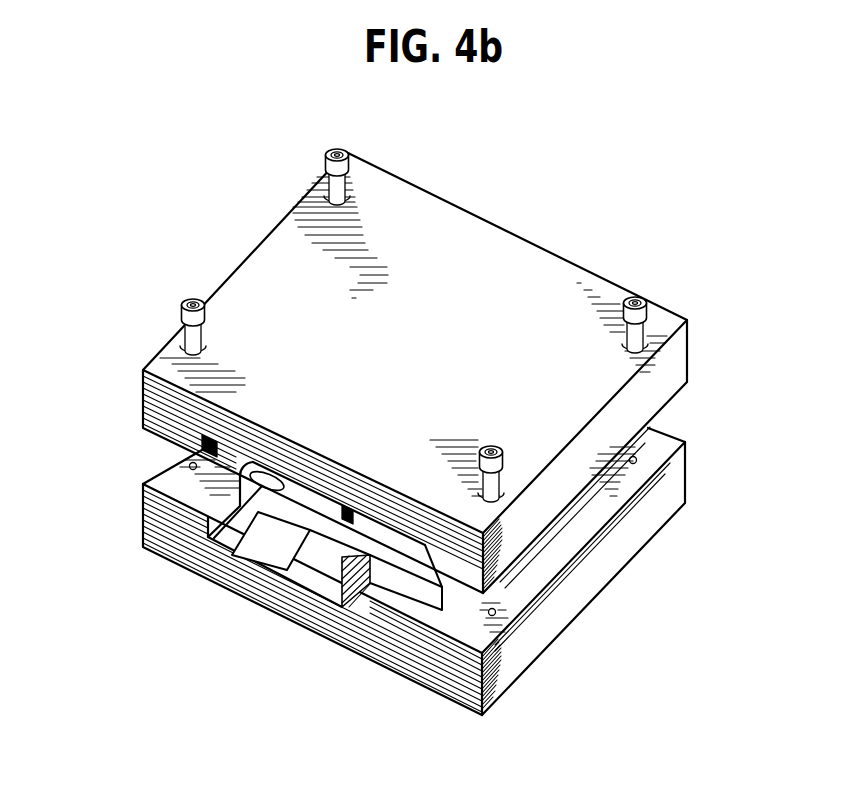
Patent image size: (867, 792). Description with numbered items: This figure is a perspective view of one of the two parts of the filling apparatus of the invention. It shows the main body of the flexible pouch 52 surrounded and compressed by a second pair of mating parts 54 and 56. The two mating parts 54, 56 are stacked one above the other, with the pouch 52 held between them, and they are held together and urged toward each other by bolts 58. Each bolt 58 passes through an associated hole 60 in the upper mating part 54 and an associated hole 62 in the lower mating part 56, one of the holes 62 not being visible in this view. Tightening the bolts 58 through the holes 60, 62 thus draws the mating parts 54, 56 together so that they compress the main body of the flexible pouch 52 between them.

The flexible pouch 52 is at (413, 553).
The mating part 54 is at (677, 365).
The mating part 56 is at (678, 468).
The bolts 58 is at (330, 150).
The holes 60 is at (350, 170).
The holes 62 is at (188, 464).